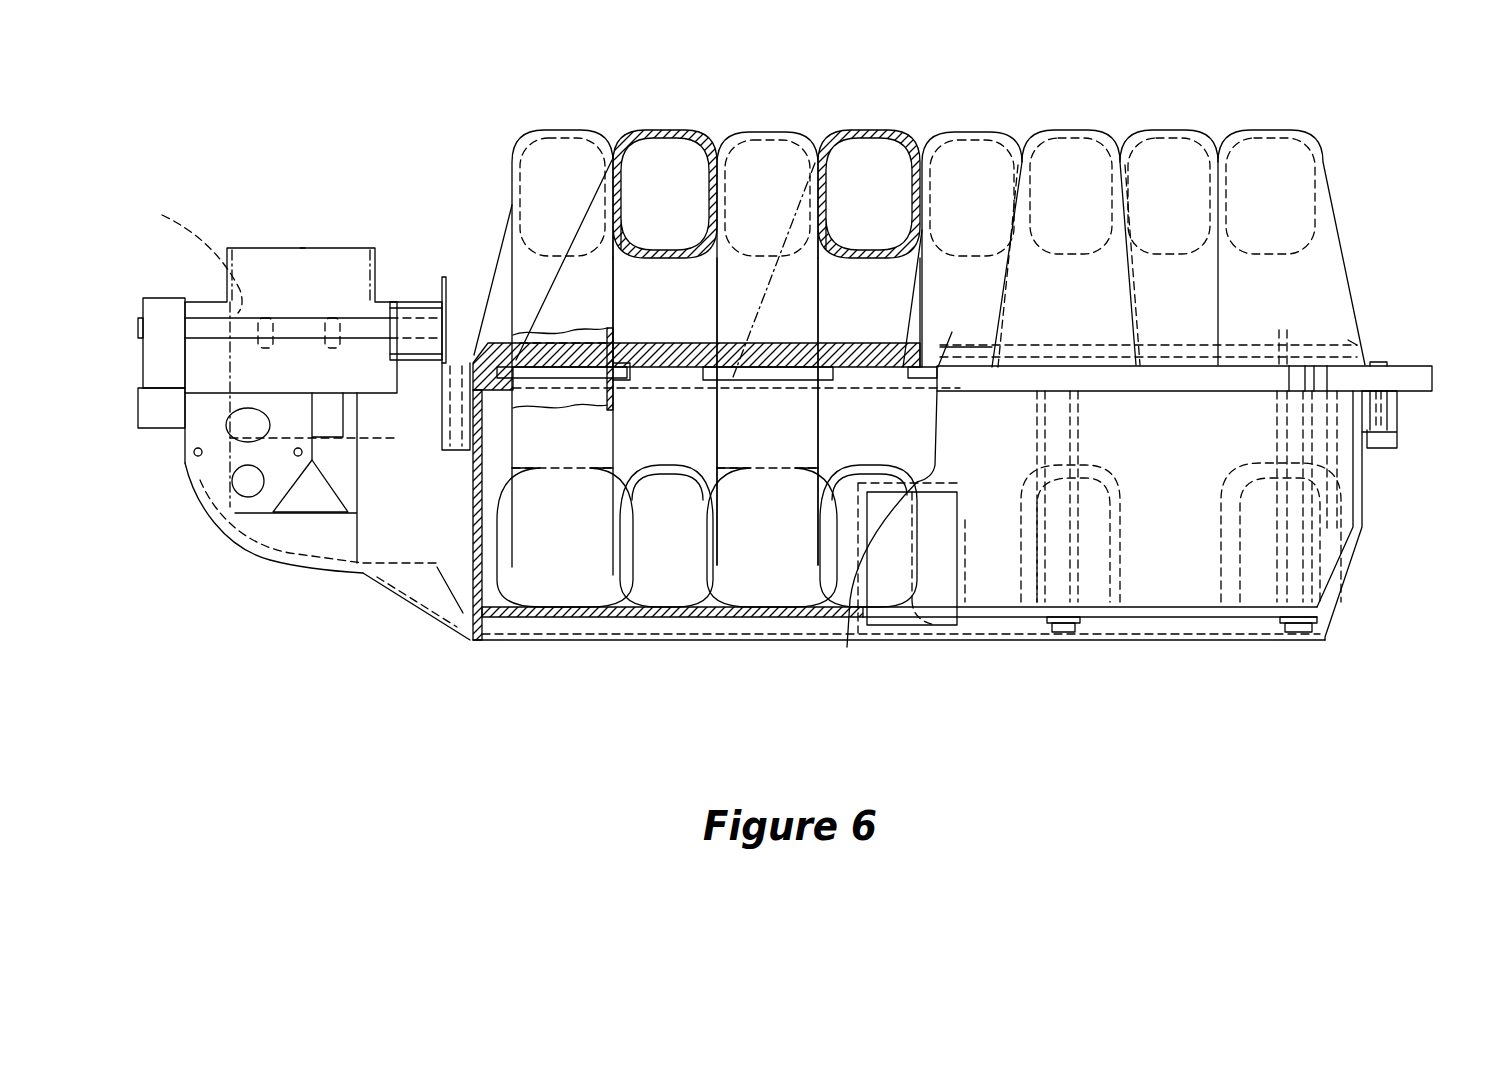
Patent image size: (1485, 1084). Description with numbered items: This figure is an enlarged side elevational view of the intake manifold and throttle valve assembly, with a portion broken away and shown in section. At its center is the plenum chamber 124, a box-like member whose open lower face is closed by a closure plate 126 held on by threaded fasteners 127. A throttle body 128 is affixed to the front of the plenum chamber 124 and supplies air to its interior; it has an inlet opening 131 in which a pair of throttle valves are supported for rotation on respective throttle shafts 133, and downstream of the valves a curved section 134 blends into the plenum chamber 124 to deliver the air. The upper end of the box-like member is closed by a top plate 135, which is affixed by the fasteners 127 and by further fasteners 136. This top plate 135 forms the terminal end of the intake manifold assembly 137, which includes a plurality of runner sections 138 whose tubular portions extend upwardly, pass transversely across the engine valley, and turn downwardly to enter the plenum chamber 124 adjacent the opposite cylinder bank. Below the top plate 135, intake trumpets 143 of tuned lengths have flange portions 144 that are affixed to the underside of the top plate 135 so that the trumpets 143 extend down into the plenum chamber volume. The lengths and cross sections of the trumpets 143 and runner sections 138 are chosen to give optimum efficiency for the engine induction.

The plenum chamber 124 is at (585, 644).
The closure plate 126 is at (690, 642).
The threaded fasteners 127 is at (1065, 633).
The throttle body 128 is at (263, 225).
The inlet opening 131 is at (310, 248).
The throttle shafts 133 is at (188, 249).
The curved section 134 is at (287, 567).
The top plate 135 is at (850, 343).
The further fasteners 136 is at (1380, 440).
The intake manifold assembly 137 is at (869, 123).
The runner sections 138 is at (572, 126).
The intake trumpets 143 is at (595, 442).
The flange portions 144 is at (640, 343).